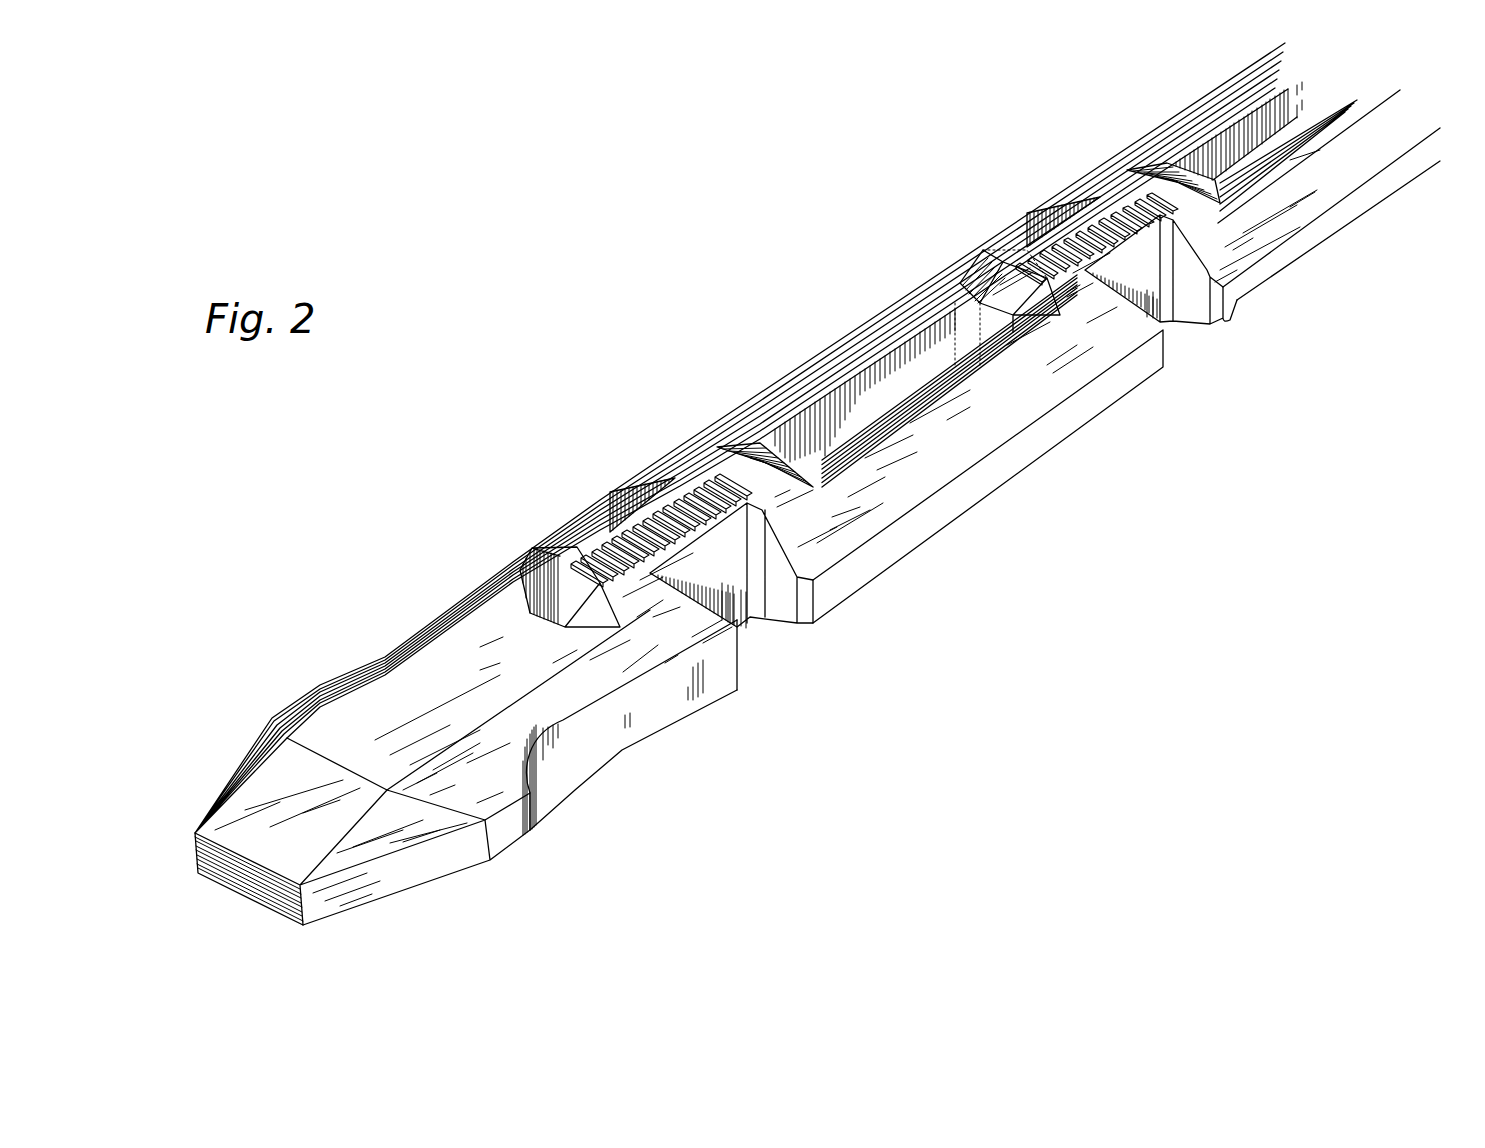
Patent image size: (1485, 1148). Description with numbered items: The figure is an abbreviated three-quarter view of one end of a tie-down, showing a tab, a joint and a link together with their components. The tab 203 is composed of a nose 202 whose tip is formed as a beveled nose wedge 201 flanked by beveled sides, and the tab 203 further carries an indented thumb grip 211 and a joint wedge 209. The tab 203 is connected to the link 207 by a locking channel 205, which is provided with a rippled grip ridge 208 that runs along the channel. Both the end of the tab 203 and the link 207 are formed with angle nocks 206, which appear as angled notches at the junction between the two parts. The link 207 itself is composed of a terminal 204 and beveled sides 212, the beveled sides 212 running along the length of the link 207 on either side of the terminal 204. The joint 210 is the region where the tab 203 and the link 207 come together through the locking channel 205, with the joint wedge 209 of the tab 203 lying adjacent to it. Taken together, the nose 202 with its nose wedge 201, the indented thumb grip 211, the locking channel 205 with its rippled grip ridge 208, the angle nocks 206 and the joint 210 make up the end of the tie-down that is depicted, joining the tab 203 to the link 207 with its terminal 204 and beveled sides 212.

The nose wedge 201 is at (303, 783).
The nose 202 is at (272, 905).
The tab 203 is at (438, 667).
The terminal 204 is at (897, 393).
The locking channel 205 is at (722, 561).
The angle nocks 206 is at (740, 653).
The link 207 is at (787, 373).
The rippled grip ridge 208 is at (612, 508).
The joint wedge 209 is at (523, 540).
The joint 210 is at (1140, 243).
The indented thumb grip 211 is at (588, 748).
The beveled sides 212 is at (1345, 167).